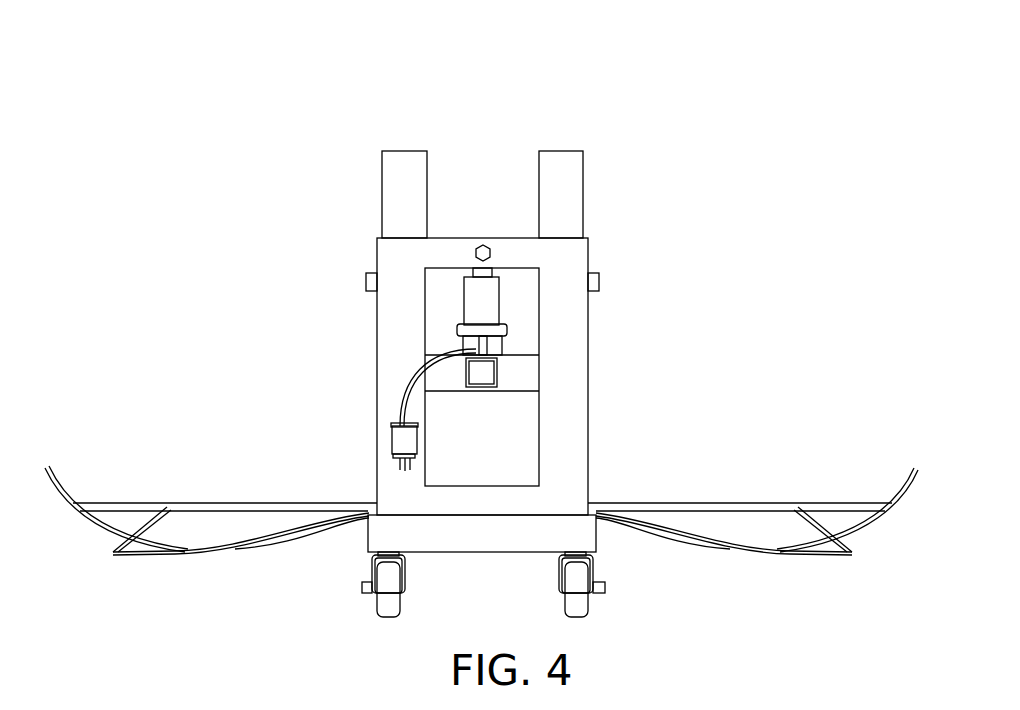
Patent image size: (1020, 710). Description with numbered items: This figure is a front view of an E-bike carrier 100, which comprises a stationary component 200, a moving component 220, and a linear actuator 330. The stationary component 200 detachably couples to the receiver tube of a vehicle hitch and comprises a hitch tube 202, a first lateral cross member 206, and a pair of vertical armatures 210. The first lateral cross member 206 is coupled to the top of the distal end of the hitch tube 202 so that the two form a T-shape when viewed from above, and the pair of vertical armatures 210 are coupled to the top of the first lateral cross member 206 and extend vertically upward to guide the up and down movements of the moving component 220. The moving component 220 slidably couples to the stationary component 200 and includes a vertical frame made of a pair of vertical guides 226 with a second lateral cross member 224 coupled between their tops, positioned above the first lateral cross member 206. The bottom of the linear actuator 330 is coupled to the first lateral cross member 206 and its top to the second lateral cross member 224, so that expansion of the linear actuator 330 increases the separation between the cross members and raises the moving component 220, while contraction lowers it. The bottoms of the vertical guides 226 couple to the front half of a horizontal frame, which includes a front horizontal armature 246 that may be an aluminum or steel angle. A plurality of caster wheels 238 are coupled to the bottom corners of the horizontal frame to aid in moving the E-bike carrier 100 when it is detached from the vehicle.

The E-bike carrier 100 is at (108, 178).
The stationary component 200 is at (367, 398).
The hitch tube 202 is at (506, 375).
The first lateral cross member 206 is at (510, 365).
The pair of vertical armatures 210 is at (552, 163).
The moving component 220 is at (492, 558).
The second lateral cross member 224 is at (450, 255).
The pair of vertical guides 226 is at (417, 478).
The plurality of caster wheels 238 is at (577, 587).
The front horizontal armature 246 is at (392, 540).
The linear actuator 330 is at (474, 302).